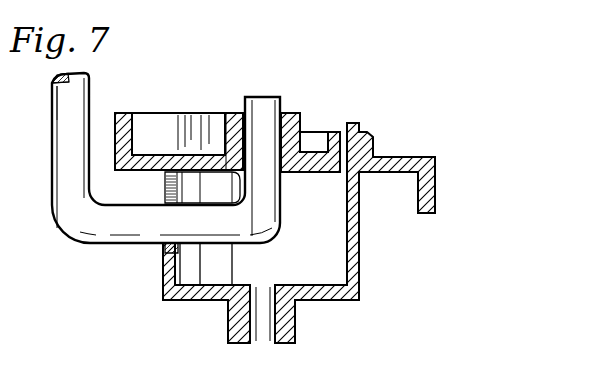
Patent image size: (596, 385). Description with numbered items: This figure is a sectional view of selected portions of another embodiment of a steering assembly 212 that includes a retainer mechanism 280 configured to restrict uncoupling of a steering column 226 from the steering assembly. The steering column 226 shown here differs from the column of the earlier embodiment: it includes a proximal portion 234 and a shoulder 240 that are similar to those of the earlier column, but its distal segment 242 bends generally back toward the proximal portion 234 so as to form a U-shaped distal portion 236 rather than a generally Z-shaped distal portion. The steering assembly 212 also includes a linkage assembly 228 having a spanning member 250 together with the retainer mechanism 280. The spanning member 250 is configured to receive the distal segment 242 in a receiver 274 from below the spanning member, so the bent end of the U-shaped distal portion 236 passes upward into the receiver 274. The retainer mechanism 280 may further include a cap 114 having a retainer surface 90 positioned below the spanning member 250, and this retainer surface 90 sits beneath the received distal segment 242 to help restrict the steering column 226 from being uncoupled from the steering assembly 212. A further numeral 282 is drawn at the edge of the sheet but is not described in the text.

The steering assembly 212 is at (333, 34).
The steering column 226 is at (43, 177).
The linkage assembly 228 is at (297, 93).
The proximal portion 234 is at (50, 92).
The U-shaped distal portion 236 is at (123, 246).
The shoulder 240 is at (145, 198).
The distal segment 242 is at (236, 130).
The spanning member 250 is at (157, 125).
The receiver 274 is at (279, 139).
The retainer mechanism 280 is at (362, 318).
The housing portion 282 is at (9, 302).
The cap 114 is at (203, 301).
The retainer surface 90 is at (167, 248).